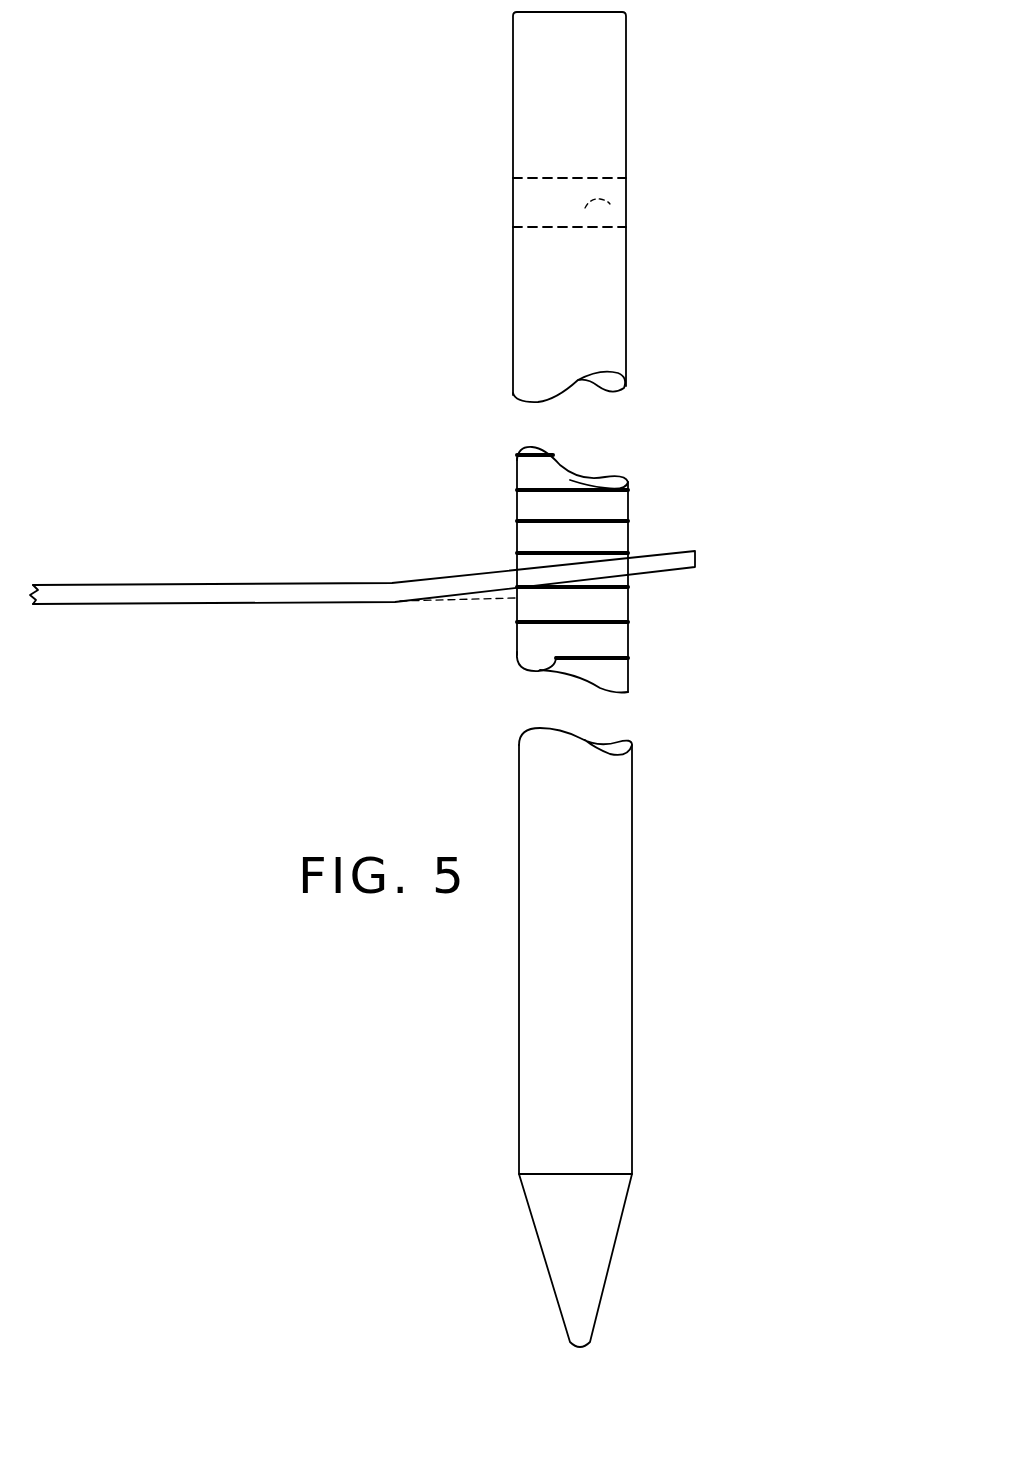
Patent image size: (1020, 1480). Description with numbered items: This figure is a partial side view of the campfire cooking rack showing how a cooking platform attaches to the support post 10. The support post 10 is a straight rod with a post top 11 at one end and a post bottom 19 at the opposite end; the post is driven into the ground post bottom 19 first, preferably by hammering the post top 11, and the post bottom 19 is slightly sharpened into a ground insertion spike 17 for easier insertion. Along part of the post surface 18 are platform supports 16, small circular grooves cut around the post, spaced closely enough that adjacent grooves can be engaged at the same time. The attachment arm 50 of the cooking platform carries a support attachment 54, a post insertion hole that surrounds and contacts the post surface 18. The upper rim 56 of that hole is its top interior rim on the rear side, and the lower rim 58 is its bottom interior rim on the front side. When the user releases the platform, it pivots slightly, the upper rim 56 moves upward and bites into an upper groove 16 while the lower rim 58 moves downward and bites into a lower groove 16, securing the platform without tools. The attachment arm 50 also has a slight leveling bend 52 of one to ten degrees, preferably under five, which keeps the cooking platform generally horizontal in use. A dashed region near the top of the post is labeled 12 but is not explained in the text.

The support post 10 is at (612, 73).
The post top 11 is at (624, 7).
The side opening 12 is at (614, 205).
The post surface 18 is at (598, 307).
The platform supports 16 is at (517, 556).
The ground insertion spike 17 is at (597, 1250).
The post bottom 19 is at (511, 1245).
The attachment arm 50 is at (78, 600).
The leveling bend 52 is at (392, 576).
The support attachment 54 is at (667, 590).
The upper rim 56 is at (632, 553).
The lower rim 58 is at (512, 596).